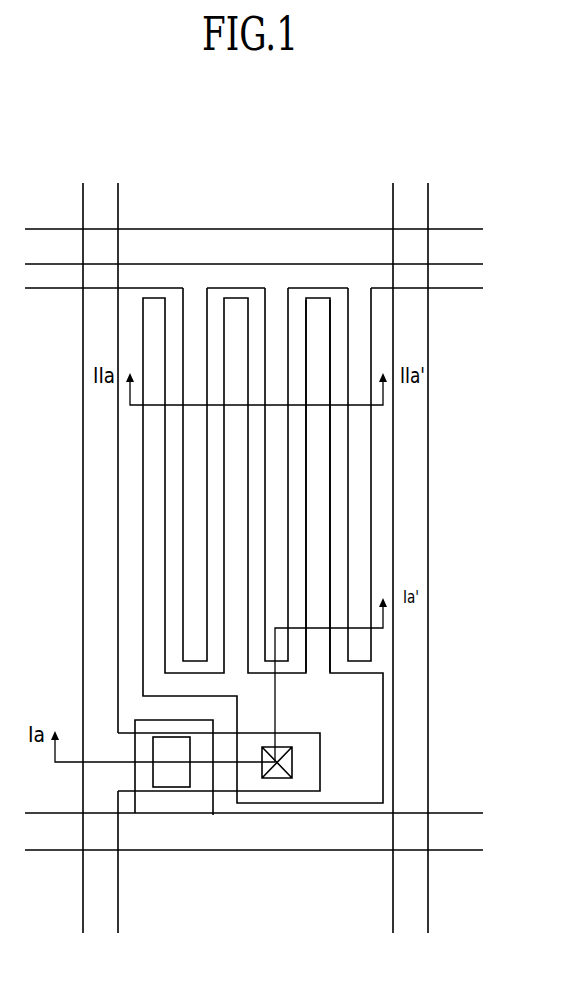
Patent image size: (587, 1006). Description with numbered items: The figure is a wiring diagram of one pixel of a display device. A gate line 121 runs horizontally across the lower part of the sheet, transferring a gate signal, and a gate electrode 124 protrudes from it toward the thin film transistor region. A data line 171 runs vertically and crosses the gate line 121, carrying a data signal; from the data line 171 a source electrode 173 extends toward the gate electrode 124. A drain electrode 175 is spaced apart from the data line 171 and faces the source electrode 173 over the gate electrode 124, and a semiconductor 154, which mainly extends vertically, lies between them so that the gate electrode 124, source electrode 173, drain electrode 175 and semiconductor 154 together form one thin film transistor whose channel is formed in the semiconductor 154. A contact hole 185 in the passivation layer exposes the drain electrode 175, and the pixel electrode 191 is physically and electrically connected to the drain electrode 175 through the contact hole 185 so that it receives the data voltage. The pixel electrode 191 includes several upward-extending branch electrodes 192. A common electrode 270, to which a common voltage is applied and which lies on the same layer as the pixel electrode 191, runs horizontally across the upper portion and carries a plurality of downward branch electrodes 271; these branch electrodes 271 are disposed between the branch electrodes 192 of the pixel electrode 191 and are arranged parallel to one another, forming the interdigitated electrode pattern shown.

The gate line 121 is at (47, 855).
The gate electrode 124 is at (217, 804).
The semiconductor 154 is at (172, 788).
The data line 171 is at (82, 463).
The source electrode 173 is at (128, 728).
The drain electrode 175 is at (323, 767).
The contact hole 185 is at (275, 779).
The pixel electrode 191 is at (332, 489).
The branch electrode of the pixel electrode 192 is at (320, 540).
The common electrode 270 is at (456, 289).
The branch electrode of the common electrode 271 is at (360, 441).